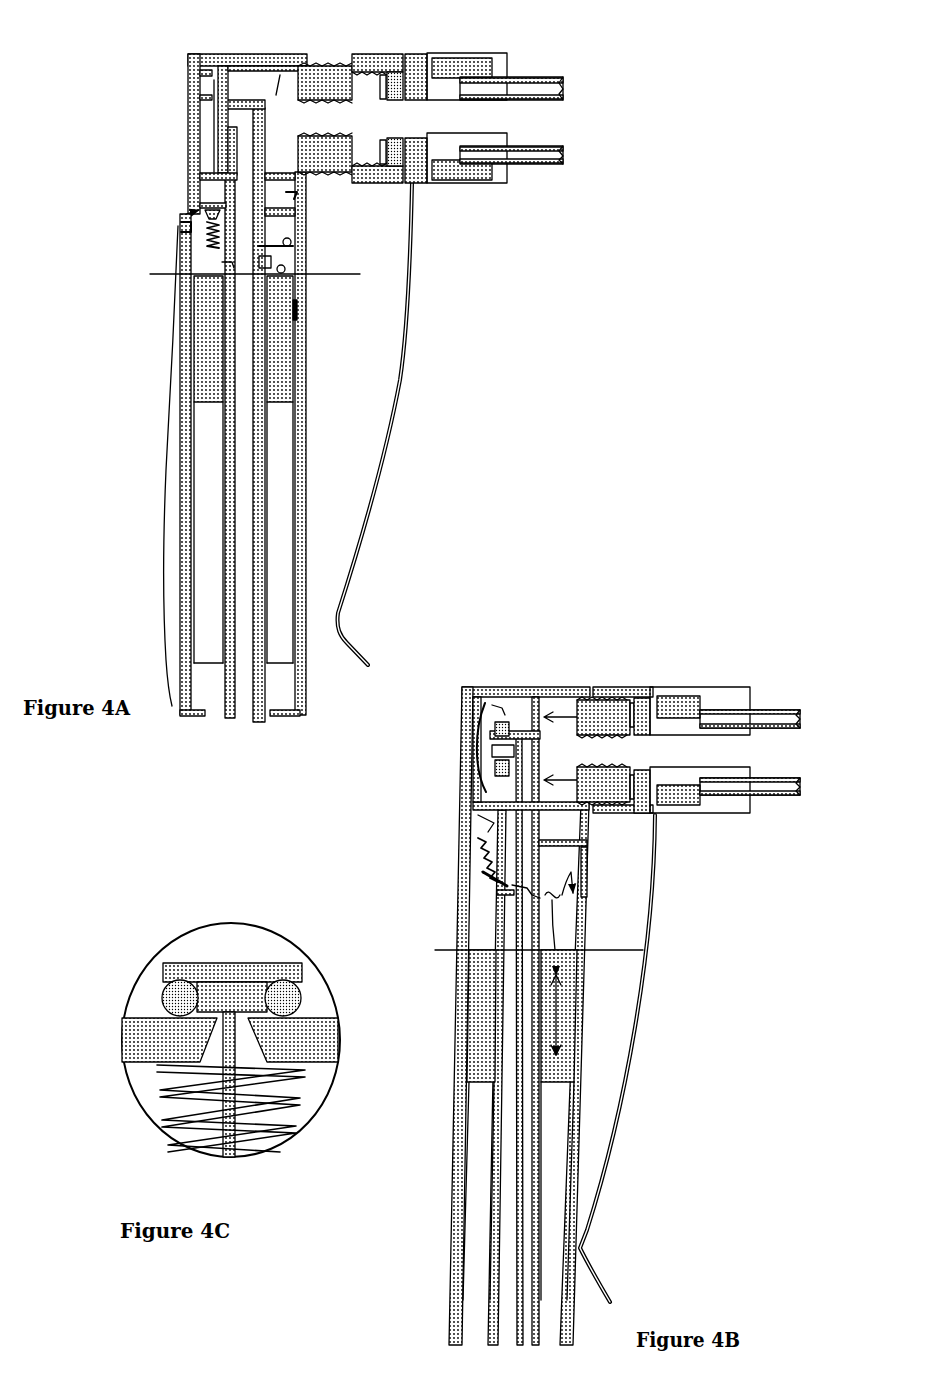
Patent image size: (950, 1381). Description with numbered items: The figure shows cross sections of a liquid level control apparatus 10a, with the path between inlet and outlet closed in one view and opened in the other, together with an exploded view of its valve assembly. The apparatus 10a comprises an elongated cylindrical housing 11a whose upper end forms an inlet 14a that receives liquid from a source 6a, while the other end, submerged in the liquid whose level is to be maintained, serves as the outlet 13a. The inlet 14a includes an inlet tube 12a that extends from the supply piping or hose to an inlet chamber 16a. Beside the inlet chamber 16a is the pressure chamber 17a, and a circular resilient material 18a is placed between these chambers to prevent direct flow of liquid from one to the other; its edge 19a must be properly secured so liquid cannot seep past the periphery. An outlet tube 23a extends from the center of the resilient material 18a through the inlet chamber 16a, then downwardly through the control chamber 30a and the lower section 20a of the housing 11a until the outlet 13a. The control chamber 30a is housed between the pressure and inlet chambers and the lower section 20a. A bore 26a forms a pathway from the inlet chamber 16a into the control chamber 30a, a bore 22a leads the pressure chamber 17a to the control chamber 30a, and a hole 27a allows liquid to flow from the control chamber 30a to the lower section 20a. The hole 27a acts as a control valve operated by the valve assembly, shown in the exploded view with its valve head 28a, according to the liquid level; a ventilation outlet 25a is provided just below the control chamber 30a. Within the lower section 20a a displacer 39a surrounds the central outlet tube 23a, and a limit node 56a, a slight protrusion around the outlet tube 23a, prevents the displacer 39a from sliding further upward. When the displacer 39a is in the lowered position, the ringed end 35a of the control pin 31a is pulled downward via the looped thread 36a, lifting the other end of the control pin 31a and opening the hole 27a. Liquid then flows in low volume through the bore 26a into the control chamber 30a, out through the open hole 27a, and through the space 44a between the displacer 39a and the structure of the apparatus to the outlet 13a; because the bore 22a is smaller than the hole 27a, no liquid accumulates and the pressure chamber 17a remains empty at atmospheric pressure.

In FIG. 4A, the source 6a is at (575, 116).
In FIG. 4B, the source 6a is at (798, 746).
In FIG. 4A, the apparatus 10a is at (135, 502).
In FIG. 4B, the apparatus 10a is at (408, 810).
In FIG. 4A, the elongated cylindrical housing 11a is at (178, 228).
In FIG. 4A, the inlet tube 12a is at (326, 118).
In FIG. 4A, the outlet 13a is at (236, 724).
In FIG. 4A, the inlet 14a is at (357, 100).
In FIG. 4A, the inlet chamber 16a is at (283, 52).
In FIG. 4A, the pressure chamber 17a is at (207, 92).
In FIG. 4A, the resilient material 18a is at (214, 121).
In FIG. 4A, the edge 19a is at (229, 66).
In FIG. 4A, the lower section 20a is at (170, 426).
In FIG. 4B, the bore 22a is at (479, 796).
In FIG. 4A, the outlet tube 23a is at (246, 240).
In FIG. 4A, the ventilation outlet 25a is at (306, 229).
In FIG. 4B, the bore 26a is at (561, 818).
In FIG. 4A, the hole 27a is at (200, 206).
In FIG. 4C, the hole 27a is at (210, 1048).
In FIG. 4C, the valve head 28a is at (222, 955).
In FIG. 4A, the control chamber 30a is at (291, 195).
In FIG. 4B, the control chamber 30a is at (490, 818).
In FIG. 4C, the control pin 31a is at (237, 1152).
In FIG. 4C, the ringed end 35a is at (290, 1002).
In FIG. 4A, the thread 36a is at (270, 262).
In FIG. 4A, the displacer 39a is at (286, 352).
In FIG. 4A, the space 44a is at (300, 313).
In FIG. 4B, the limit node 56a is at (500, 898).